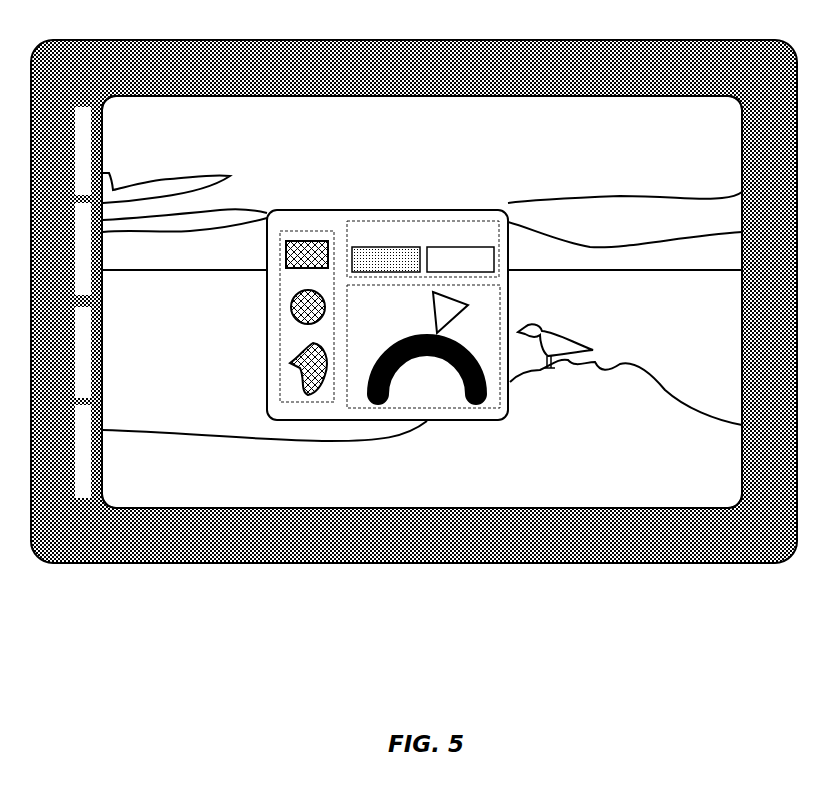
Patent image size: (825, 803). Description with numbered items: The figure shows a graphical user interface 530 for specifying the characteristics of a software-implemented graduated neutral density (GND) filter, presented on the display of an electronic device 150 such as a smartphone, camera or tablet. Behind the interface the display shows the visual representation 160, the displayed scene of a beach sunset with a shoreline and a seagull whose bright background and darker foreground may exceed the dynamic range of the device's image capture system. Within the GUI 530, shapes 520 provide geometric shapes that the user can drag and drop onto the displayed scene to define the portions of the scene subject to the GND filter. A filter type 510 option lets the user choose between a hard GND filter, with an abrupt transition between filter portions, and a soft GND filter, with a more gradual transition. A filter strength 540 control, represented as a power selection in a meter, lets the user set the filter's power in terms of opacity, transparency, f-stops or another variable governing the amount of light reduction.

The electronic device 150 is at (123, 39).
The visual representation 160 is at (185, 508).
The filter type 510 is at (424, 210).
The shapes 520 is at (282, 278).
The graphical user interface 530 is at (492, 220).
The filter strength 540 is at (467, 410).